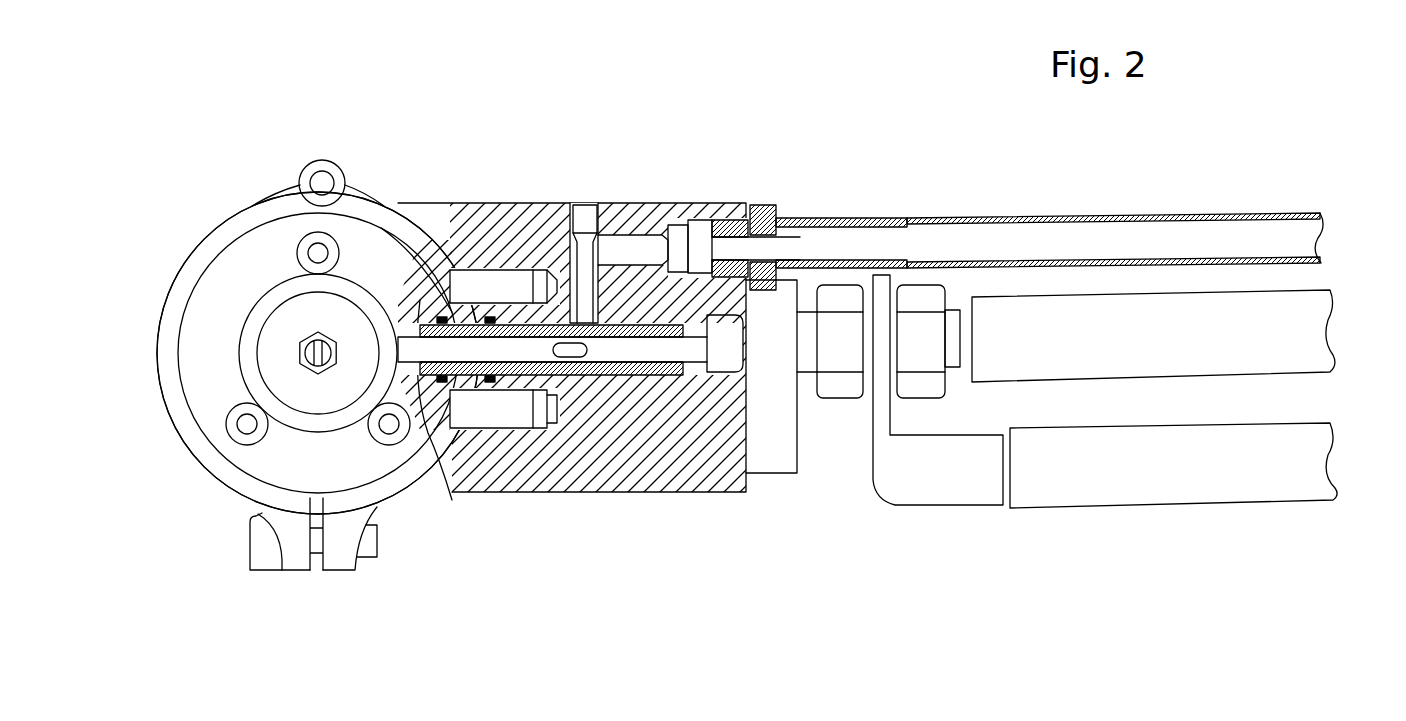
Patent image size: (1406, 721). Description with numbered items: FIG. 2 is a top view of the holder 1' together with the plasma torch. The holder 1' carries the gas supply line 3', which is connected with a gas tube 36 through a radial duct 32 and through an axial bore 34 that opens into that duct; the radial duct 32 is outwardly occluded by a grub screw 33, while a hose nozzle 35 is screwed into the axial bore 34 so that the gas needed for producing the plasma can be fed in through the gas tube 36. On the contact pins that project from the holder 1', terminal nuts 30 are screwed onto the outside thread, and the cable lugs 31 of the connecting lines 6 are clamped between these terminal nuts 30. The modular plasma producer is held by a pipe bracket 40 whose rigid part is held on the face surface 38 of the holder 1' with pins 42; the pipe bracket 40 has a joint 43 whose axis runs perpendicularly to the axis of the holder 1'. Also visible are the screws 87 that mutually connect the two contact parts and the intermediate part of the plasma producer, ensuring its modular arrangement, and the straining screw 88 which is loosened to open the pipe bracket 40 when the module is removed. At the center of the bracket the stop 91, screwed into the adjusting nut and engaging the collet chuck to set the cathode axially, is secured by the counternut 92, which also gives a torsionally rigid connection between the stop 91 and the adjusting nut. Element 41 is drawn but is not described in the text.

The holder 1' is at (572, 428).
The gas supply line 3' is at (570, 484).
The connecting lines 6 is at (1305, 457).
The terminal nuts 30 is at (843, 382).
The cable lugs 31 is at (880, 313).
The radial duct 32 is at (575, 283).
The grub screw 33 is at (585, 217).
The axial bore 34 is at (622, 250).
The hose nozzle 35 is at (763, 220).
The gas tube 36 is at (1080, 238).
The face surface 38 is at (422, 232).
The pipe bracket 40 is at (192, 506).
The hub boss 41 is at (397, 480).
The pins 42 is at (490, 417).
The joint 43 is at (320, 178).
The screws 87 is at (230, 410).
The straining screw 88 is at (263, 557).
The stop 91 is at (298, 322).
The counternut 92 is at (178, 420).